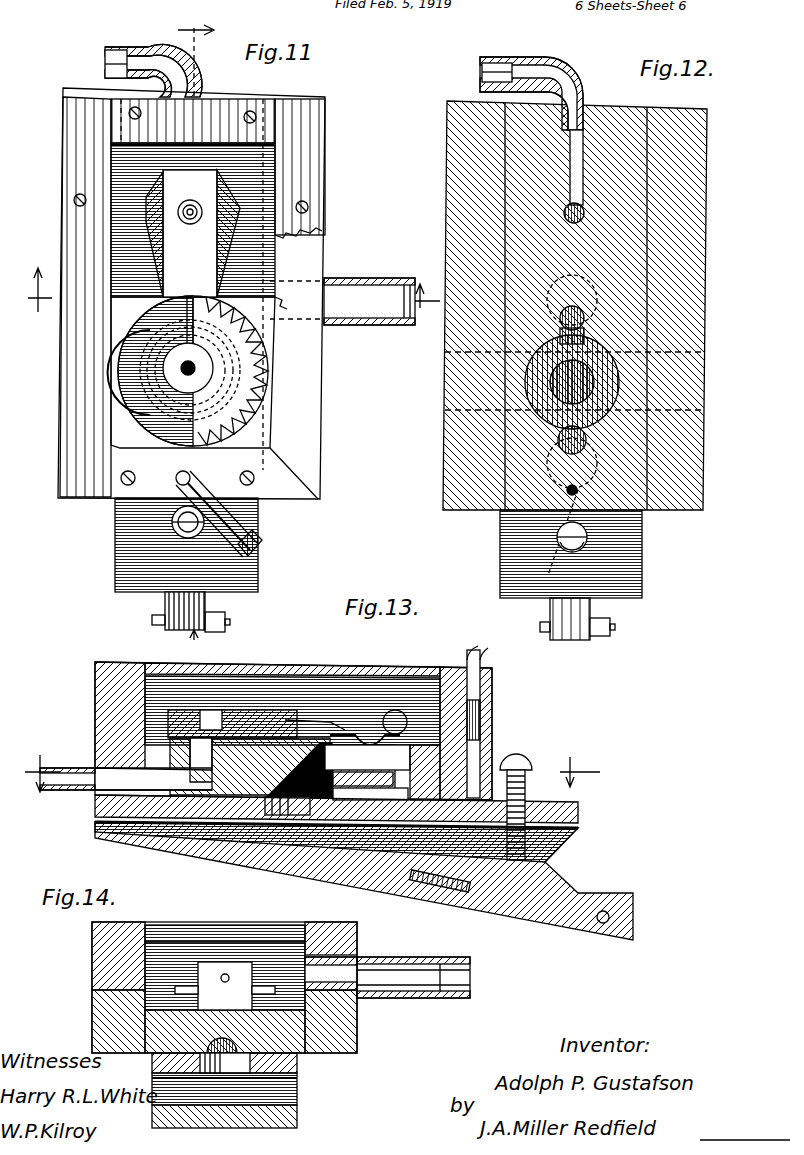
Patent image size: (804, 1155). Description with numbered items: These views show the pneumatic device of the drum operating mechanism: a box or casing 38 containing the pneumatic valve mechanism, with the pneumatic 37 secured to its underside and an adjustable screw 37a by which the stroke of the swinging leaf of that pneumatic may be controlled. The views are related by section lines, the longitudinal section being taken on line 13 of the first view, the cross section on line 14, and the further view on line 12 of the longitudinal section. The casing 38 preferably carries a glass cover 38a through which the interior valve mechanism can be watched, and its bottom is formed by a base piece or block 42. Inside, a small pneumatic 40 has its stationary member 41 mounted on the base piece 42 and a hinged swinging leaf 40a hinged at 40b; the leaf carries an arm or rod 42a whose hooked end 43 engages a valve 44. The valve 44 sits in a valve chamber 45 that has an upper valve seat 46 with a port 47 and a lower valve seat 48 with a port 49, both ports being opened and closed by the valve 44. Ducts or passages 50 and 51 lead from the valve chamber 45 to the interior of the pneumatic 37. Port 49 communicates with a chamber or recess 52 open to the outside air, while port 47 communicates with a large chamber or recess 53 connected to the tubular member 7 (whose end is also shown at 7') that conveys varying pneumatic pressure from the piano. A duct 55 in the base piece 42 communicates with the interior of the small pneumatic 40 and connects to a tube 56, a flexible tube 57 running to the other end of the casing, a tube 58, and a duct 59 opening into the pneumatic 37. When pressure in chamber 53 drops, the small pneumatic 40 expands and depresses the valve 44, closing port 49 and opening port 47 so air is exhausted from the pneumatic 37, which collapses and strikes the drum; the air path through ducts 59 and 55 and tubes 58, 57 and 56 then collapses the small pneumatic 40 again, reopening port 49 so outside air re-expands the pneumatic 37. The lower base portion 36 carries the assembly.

In FIG. 11, the tubular member 7 is at (369, 289).
In FIG. 13, the tubular member 7 is at (297, 686).
In FIG. 14, the tubular member 7 is at (387, 995).
In FIG. 11, the tube end 7' is at (379, 335).
In FIG. 14, the tube end 7' is at (406, 943).
In FIG. 13, the section line 12— 12 is at (305, 773).
In FIG. 11, the section line 13— 13 is at (195, 330).
In FIG. 13, the section line 13— 13 is at (195, 637).
In FIG. 11, the section line 14— 14 is at (228, 290).
In FIG. 13, the base wedge 36 is at (455, 870).
In FIG. 14, the base wedge 36 is at (230, 1118).
In FIG. 11, the pneumatic 37 is at (115, 548).
In FIG. 12, the pneumatic 37 is at (644, 554).
In FIG. 13, the pneumatic 37 is at (578, 812).
In FIG. 14, the pneumatic 37 is at (288, 1068).
In FIG. 11, the adjustable screw 37a is at (180, 535).
In FIG. 12, the adjustable screw 37a is at (590, 537).
In FIG. 13, the adjustable screw 37a is at (540, 762).
In FIG. 11, the box or casing 38 is at (230, 86).
In FIG. 12, the box or casing 38 is at (712, 98).
In FIG. 13, the box or casing 38 is at (494, 706).
In FIG. 14, the box or casing 38 is at (92, 1006).
In FIG. 11, the glass cover 38a is at (258, 452).
In FIG. 13, the glass cover 38a is at (375, 680).
In FIG. 14, the glass cover 38a is at (185, 940).
In FIG. 11, the small pneumatic 40 is at (193, 233).
In FIG. 13, the small pneumatic 40 is at (245, 710).
In FIG. 14, the small pneumatic 40 is at (221, 979).
In FIG. 11, the hinged swinging leaf 40a is at (275, 352).
In FIG. 13, the hinged swinging leaf 40a is at (200, 710).
In FIG. 11, the hinge 40b is at (222, 317).
In FIG. 13, the hinge 40b is at (350, 695).
In FIG. 14, the hinge 40b is at (275, 975).
In FIG. 13, the stationary member 41 is at (364, 717).
In FIG. 12, the base piece or block 42 is at (703, 312).
In FIG. 13, the base piece or block 42 is at (235, 795).
In FIG. 11, the arm or rod 42a is at (250, 296).
In FIG. 13, the arm or rod 42a is at (383, 700).
In FIG. 14, the arm or rod 42a is at (228, 975).
In FIG. 13, the hooked end 43 is at (402, 717).
In FIG. 11, the valve 44 is at (162, 383).
In FIG. 13, the valve 44 is at (400, 770).
In FIG. 11, the valve chamber 45 is at (165, 400).
In FIG. 13, the valve chamber 45 is at (300, 790).
In FIG. 13, the upper valve seat 46 is at (359, 730).
In FIG. 11, the port 47 is at (178, 358).
In FIG. 13, the port 47 is at (248, 766).
In FIG. 12, the lower valve seat 48 is at (600, 382).
In FIG. 13, the lower valve seat 48 is at (370, 806).
In FIG. 12, the port 49 is at (590, 368).
In FIG. 13, the port 49 is at (362, 830).
In FIG. 12, the duct or passage 50 is at (580, 325).
In FIG. 13, the duct or passage 50 is at (285, 800).
In FIG. 14, the duct or passage 50 is at (160, 1076).
In FIG. 12, the duct or passage 51 is at (568, 500).
In FIG. 13, the duct or passage 51 is at (447, 832).
In FIG. 14, the duct or passage 51 is at (200, 1020).
In FIG. 12, the chamber or recess 52 is at (690, 412).
In FIG. 13, the chamber or recess 52 is at (340, 815).
In FIG. 13, the large chamber or recess 53 is at (300, 705).
In FIG. 12, the duct 55 is at (587, 140).
In FIG. 13, the duct 55 is at (200, 790).
In FIG. 11, the tube 56 is at (196, 62).
In FIG. 12, the tube 56 is at (565, 76).
In FIG. 13, the tube 56 is at (98, 775).
In FIG. 11, the flexible tube 57 is at (118, 47).
In FIG. 12, the flexible tube 57 is at (500, 57).
In FIG. 11, the tube 58 is at (254, 550).
In FIG. 13, the tube 58 is at (484, 662).
In FIG. 13, the duct 59 is at (482, 740).